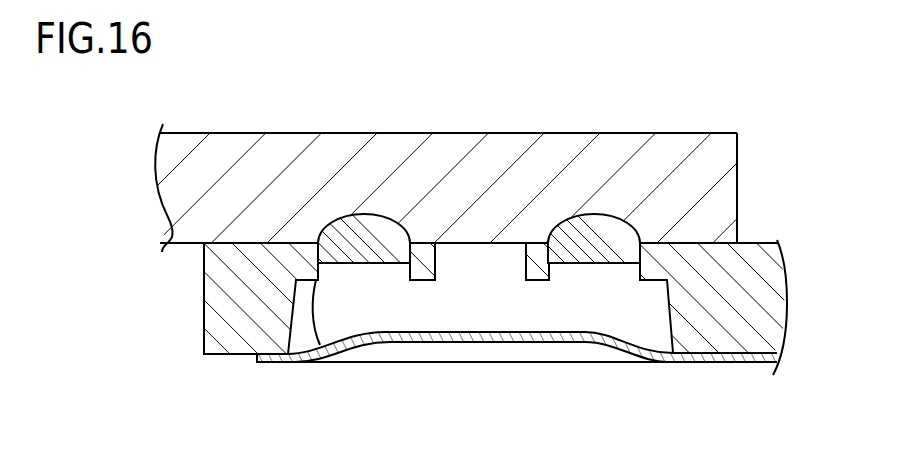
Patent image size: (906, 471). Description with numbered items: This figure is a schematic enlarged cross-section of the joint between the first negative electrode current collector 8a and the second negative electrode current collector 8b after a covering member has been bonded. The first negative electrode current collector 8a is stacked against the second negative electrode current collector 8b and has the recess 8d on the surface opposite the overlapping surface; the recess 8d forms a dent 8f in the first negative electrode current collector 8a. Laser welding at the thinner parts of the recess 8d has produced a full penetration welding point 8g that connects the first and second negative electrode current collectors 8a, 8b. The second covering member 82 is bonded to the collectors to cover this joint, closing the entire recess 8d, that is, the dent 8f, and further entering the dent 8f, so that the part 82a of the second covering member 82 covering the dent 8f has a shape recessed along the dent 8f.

The first negative electrode current collector 8a is at (240, 343).
The second negative electrode current collector 8b is at (232, 143).
The recess 8d is at (320, 345).
The dent 8f is at (563, 307).
The full penetration welding point 8g is at (589, 228).
The second covering member 82 is at (733, 357).
The part covering the dent 82a is at (470, 340).